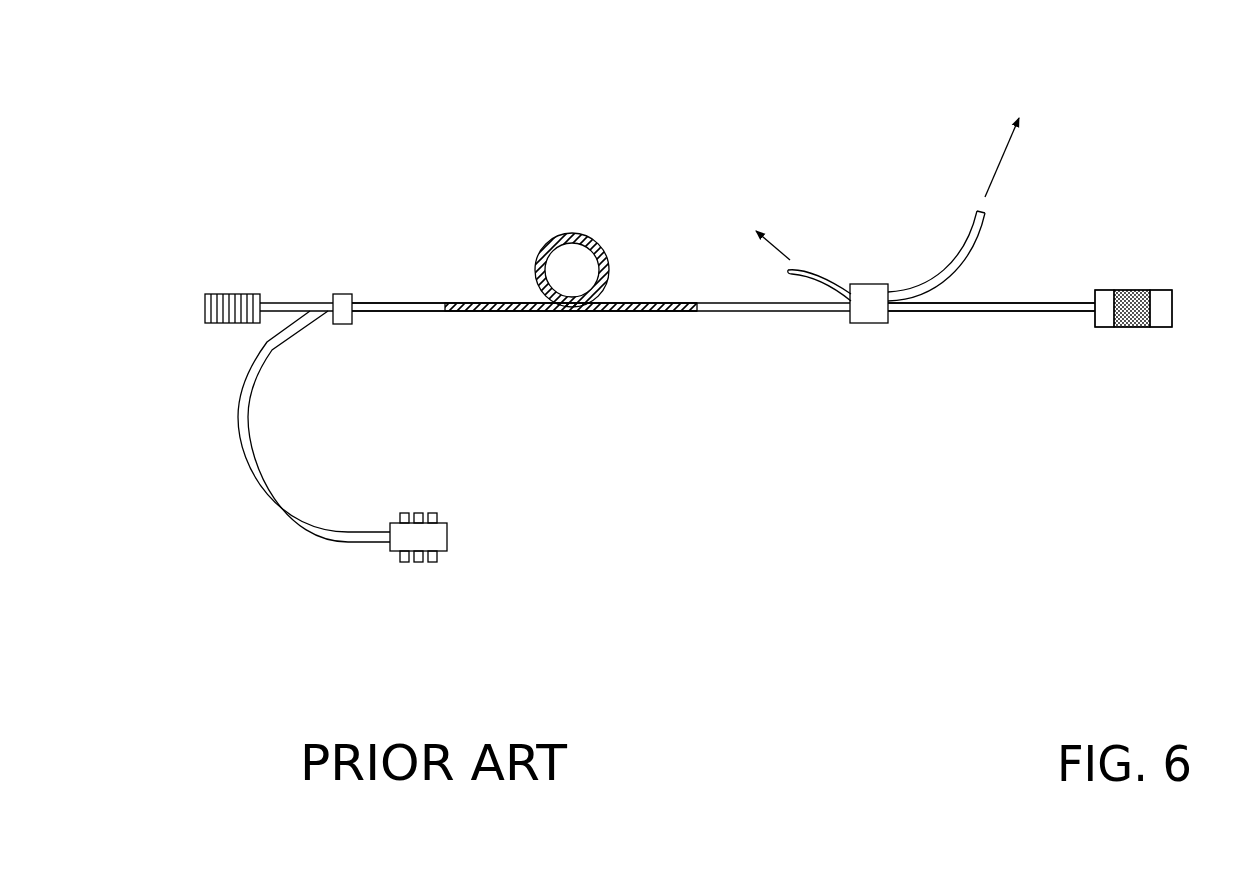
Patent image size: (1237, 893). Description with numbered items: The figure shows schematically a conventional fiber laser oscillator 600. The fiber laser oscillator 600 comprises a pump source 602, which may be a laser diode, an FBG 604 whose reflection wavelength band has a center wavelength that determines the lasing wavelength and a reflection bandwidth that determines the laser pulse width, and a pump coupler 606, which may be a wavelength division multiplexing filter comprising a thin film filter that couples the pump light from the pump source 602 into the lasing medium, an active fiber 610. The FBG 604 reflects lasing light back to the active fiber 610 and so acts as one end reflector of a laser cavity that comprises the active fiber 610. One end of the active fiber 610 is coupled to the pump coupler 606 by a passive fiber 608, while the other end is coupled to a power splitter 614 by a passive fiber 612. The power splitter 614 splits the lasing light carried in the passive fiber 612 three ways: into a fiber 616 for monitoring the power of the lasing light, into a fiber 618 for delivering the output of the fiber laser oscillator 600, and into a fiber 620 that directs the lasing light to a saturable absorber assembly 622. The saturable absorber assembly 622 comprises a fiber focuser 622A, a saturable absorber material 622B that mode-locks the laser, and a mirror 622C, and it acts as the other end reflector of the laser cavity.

The fiber laser oscillator 600 is at (347, 134).
The pump source 602 is at (447, 555).
The FBG 604 is at (215, 293).
The pump coupler 606 is at (342, 292).
The passive fiber 608 is at (392, 302).
The active fiber 610 is at (545, 243).
The passive fiber 612 is at (747, 312).
The power splitter 614 is at (870, 323).
The fiber 616 is at (831, 285).
The fiber 618 is at (925, 278).
The fiber 620 is at (982, 303).
The saturable absorber assembly 622 is at (1160, 313).
The fiber focuser 622A is at (1105, 328).
The saturable absorber material 622B is at (1140, 328).
The mirror 622C is at (1173, 310).